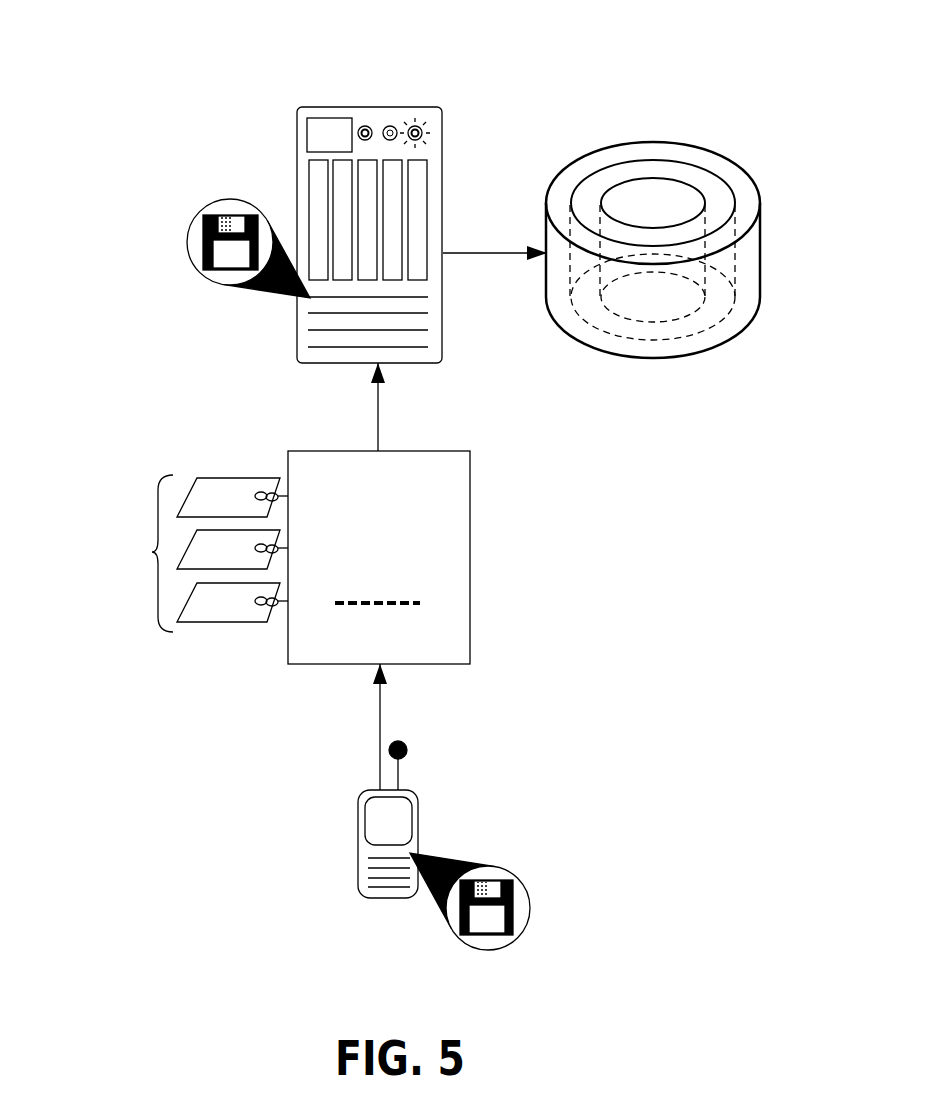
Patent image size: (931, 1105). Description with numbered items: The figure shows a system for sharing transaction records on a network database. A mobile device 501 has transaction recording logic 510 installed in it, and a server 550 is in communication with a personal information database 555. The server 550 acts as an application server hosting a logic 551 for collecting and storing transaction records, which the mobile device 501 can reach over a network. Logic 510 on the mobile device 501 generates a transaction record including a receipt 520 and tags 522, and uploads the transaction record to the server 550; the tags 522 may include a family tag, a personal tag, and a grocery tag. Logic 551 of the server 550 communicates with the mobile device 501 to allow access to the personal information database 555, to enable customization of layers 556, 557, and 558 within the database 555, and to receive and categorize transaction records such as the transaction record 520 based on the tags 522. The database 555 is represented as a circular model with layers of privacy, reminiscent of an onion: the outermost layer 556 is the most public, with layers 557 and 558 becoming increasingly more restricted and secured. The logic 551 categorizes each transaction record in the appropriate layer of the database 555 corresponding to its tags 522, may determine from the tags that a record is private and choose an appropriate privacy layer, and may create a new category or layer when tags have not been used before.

The mobile device 501 is at (420, 808).
The transaction recording logic 510 is at (462, 938).
The transaction record 520 is at (470, 513).
The tags 522 is at (152, 550).
The server 550 is at (393, 107).
The logic 551 is at (203, 240).
The personal information database 555 is at (617, 353).
The outermost layer 556 is at (657, 147).
The layer 557 is at (682, 173).
The layer 558 is at (693, 202).